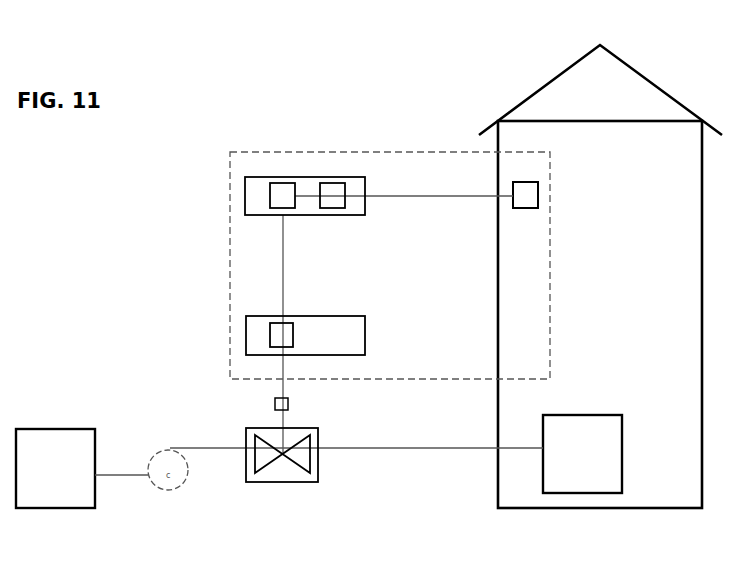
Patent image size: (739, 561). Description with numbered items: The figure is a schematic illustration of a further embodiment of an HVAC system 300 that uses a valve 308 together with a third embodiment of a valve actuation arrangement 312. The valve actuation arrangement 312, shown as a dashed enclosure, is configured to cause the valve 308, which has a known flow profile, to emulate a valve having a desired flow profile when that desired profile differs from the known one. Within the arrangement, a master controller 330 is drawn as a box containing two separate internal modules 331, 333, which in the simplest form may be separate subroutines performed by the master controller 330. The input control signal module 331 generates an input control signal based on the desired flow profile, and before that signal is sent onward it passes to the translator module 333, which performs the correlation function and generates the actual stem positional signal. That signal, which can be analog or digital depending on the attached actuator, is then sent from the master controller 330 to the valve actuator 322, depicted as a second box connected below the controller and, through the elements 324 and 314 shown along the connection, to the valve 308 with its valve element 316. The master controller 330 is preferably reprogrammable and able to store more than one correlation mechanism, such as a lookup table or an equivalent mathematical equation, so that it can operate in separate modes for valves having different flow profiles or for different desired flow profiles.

The HVAC system 300 is at (222, 96).
The valve actuation arrangement 312 is at (275, 150).
The master controller 330 is at (255, 176).
The translator module 333 is at (268, 198).
The input control signal module 331 is at (335, 182).
The valve actuator 322 is at (257, 316).
The sensor 324 is at (268, 338).
The actuator 314 is at (285, 423).
The valve 308 is at (268, 482).
The valve 316 is at (257, 446).